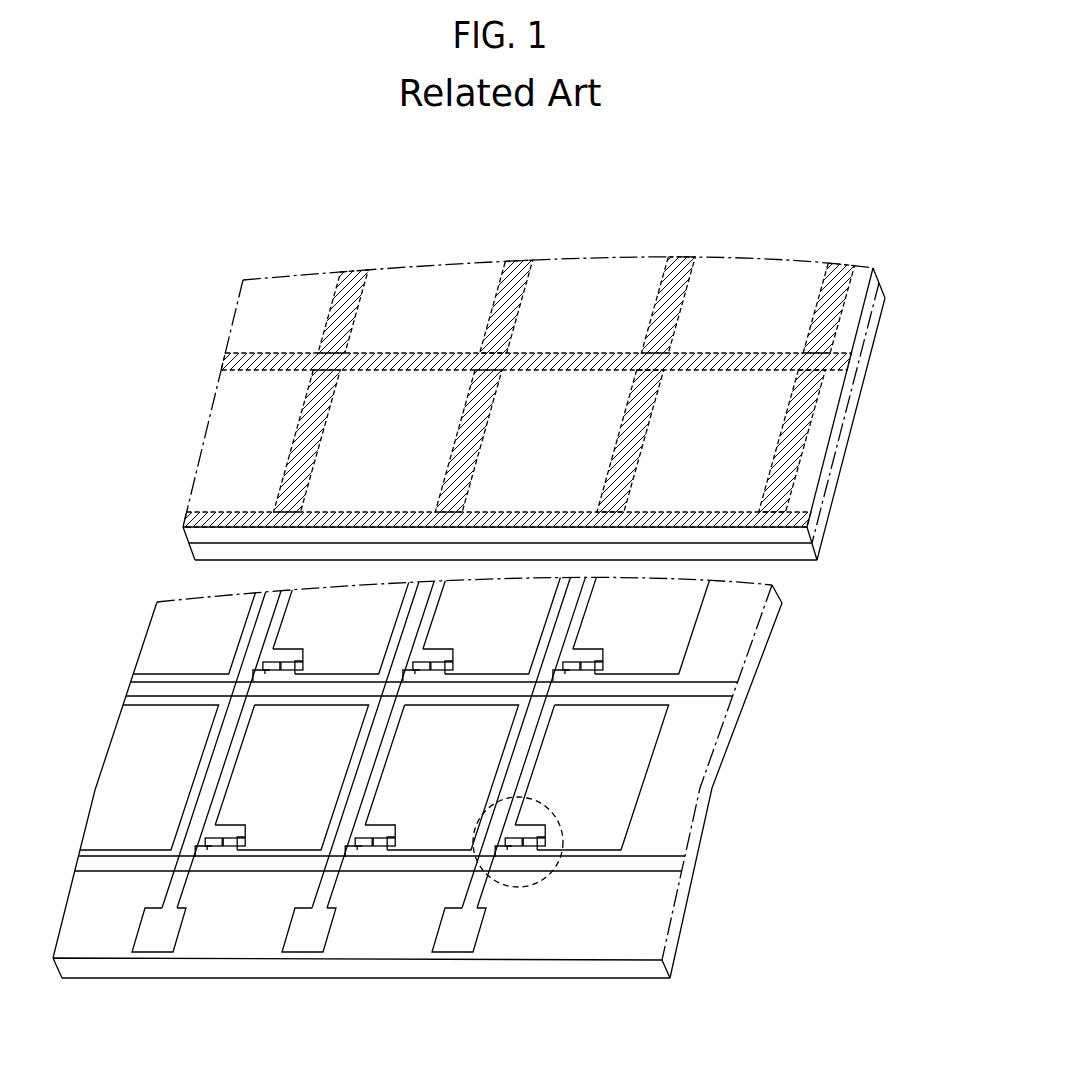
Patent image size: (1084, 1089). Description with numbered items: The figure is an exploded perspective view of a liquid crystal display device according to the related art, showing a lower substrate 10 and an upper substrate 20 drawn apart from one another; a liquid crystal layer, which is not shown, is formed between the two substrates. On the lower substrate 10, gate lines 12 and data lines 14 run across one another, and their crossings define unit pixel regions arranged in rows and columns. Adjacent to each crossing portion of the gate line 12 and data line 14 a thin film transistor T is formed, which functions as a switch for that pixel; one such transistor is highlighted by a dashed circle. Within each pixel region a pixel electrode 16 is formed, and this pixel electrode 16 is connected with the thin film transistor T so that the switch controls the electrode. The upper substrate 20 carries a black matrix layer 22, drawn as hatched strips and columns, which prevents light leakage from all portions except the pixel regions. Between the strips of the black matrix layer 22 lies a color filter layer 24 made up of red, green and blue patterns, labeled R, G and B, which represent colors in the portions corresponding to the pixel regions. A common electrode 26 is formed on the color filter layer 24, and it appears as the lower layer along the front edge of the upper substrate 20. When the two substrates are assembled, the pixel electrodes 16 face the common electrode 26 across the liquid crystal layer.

The lower substrate 10 is at (622, 970).
The gate line 12 is at (637, 865).
The data line 14 is at (473, 893).
The pixel electrode 16 is at (643, 792).
The thin film transistor T is at (518, 886).
The upper substrate 20 is at (797, 537).
The black matrix layer 22 is at (843, 358).
The color filter layer 24 is at (517, 388).
The common electrode 26 is at (800, 552).